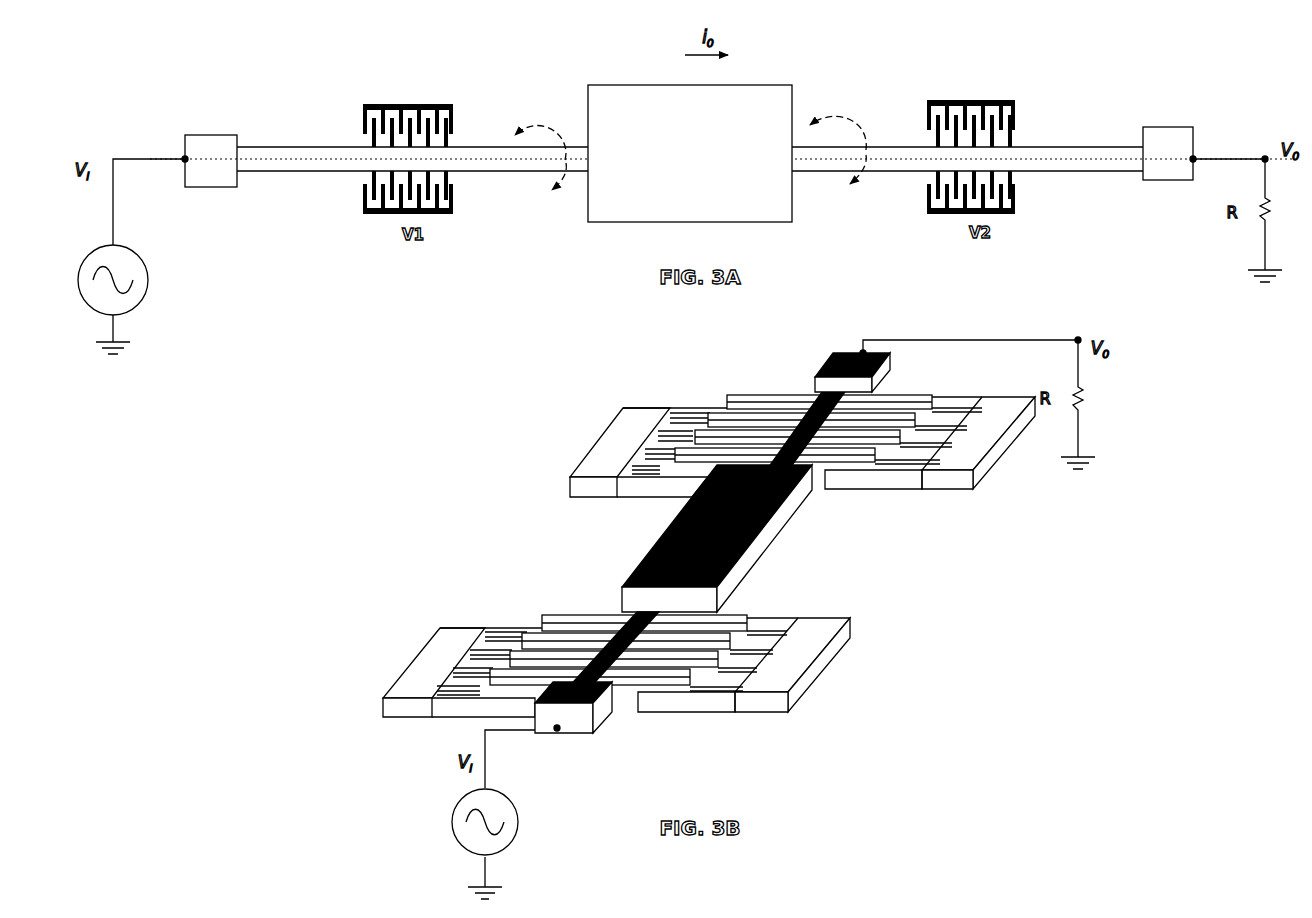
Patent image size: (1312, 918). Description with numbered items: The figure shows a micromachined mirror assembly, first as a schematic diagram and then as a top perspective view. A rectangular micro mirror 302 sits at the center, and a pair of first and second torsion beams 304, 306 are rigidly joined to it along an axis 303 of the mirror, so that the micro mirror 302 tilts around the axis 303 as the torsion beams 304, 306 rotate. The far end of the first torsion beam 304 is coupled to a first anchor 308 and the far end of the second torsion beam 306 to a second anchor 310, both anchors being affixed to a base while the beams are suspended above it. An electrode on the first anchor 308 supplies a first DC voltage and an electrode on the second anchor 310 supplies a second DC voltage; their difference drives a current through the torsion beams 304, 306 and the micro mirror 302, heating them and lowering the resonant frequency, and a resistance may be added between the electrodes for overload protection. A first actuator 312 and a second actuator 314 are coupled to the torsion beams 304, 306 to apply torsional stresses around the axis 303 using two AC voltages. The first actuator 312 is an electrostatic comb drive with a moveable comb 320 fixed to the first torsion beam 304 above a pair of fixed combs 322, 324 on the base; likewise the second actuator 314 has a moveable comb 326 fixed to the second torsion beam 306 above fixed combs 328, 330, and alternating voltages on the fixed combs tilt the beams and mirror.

In FIG. 3A, the micro mirror 302 is at (690, 153).
In FIG. 3B, the micro mirror 302 is at (636, 555).
In FIG. 3A, the axis 303 is at (1243, 158).
In FIG. 3A, the first torsion beam 304 is at (500, 147).
In FIG. 3B, the first torsion beam 304 is at (615, 644).
In FIG. 3A, the second torsion beam 306 is at (890, 147).
In FIG. 3B, the second torsion beam 306 is at (805, 409).
In FIG. 3A, the first anchor 308 is at (213, 135).
In FIG. 3B, the first anchor 308 is at (571, 746).
In FIG. 3A, the second anchor 310 is at (1175, 127).
In FIG. 3B, the second anchor 310 is at (848, 337).
In FIG. 3A, the first actuator 312 is at (401, 94).
In FIG. 3B, the first actuator 312 is at (612, 622).
In FIG. 3A, the second actuator 314 is at (962, 92).
In FIG. 3B, the second actuator 314 is at (807, 403).
In FIG. 3B, the moveable comb 320 is at (552, 615).
In FIG. 3B, the fixed comb 322 is at (430, 640).
In FIG. 3B, the fixed comb 324 is at (837, 625).
In FIG. 3B, the moveable comb 326 is at (753, 395).
In FIG. 3B, the fixed comb 328 is at (622, 418).
In FIG. 3B, the fixed comb 330 is at (1000, 405).